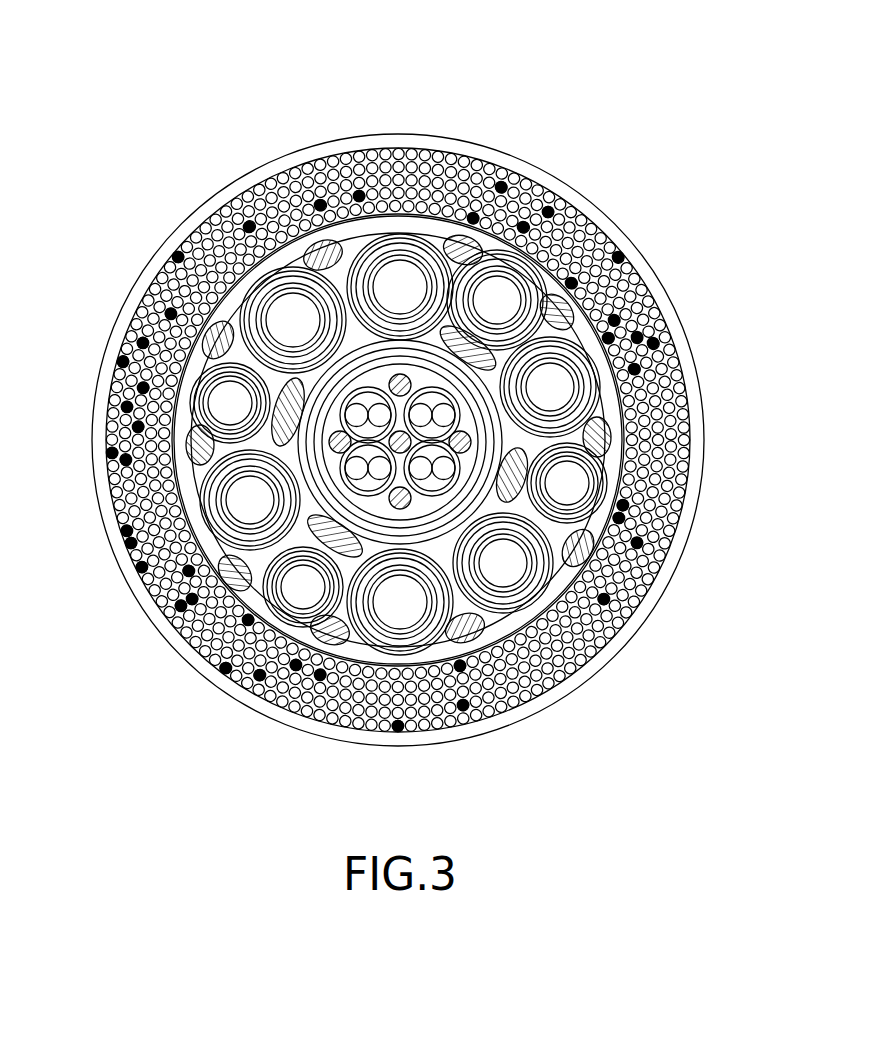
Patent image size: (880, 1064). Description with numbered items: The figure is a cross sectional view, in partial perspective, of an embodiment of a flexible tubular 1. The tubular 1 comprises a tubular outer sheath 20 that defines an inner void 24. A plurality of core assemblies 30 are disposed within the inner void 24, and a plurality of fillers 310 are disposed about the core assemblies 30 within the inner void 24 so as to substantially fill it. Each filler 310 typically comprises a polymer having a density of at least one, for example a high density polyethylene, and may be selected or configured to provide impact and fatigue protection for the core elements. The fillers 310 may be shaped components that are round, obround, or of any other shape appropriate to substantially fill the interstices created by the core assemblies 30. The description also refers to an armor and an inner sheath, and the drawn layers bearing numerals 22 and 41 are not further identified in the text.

The tubular 1 is at (148, 112).
The tubular outer sheath 20 is at (98, 515).
The shield braid 22 is at (667, 347).
The inner void 24 is at (122, 527).
The core assemblies 30 is at (197, 367).
The shield layer 41 is at (578, 615).
The fillers 310 is at (463, 250).